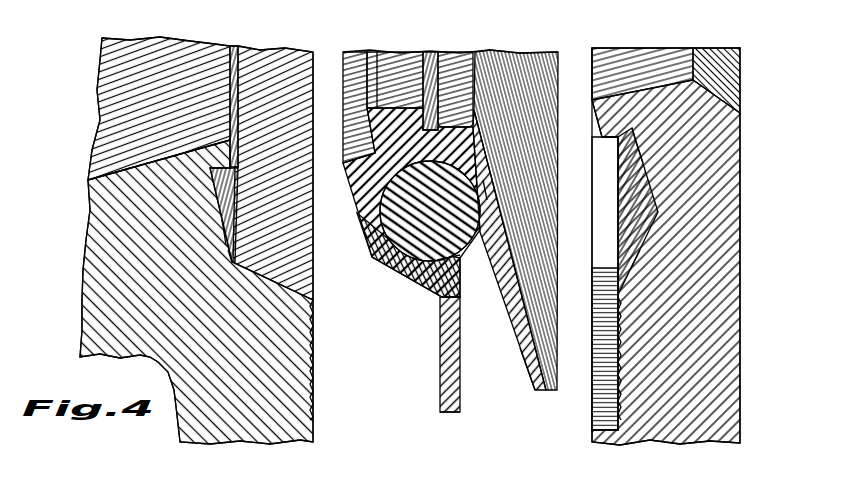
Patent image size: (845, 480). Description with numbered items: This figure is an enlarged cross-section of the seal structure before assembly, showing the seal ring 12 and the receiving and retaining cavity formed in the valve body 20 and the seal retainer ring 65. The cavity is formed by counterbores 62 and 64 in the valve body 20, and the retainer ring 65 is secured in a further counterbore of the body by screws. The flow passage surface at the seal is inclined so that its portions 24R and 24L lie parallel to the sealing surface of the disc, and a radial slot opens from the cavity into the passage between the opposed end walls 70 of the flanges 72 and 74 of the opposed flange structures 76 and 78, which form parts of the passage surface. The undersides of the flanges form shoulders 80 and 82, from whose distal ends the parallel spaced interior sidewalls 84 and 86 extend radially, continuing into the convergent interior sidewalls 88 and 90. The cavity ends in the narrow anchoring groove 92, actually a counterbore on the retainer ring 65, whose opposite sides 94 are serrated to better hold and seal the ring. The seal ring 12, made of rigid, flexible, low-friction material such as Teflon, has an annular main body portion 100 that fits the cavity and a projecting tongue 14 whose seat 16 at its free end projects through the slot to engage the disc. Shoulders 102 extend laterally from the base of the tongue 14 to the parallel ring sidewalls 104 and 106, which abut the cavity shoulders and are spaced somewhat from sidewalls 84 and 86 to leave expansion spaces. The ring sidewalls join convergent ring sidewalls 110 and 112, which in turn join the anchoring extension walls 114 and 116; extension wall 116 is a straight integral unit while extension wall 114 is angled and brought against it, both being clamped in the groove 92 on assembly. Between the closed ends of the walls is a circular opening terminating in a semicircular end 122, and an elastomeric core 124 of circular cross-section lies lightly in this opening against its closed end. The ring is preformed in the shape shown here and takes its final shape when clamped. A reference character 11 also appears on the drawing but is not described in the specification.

The section line reference 11 is at (358, 441).
The seal ring 12 is at (441, 351).
The tongue 14 is at (407, 100).
The seat 16 is at (390, 100).
The valve body 20 is at (88, 310).
The annular inner surface portion 24L is at (108, 172).
The annular inner surface portion 24R is at (677, 78).
The counterbore 62 is at (290, 283).
The counterbore 64 is at (644, 190).
The seal retainer ring 65 is at (732, 362).
The end walls 70 is at (238, 82).
The flange 72 is at (238, 152).
The flange 74 is at (592, 102).
The flange structure 76 is at (215, 140).
The flange structure 78 is at (610, 100).
The shoulder 80 is at (230, 158).
The shoulder 82 is at (633, 140).
The interior sidewall 84 is at (228, 240).
The interior sidewall 86 is at (635, 163).
The convergent interior sidewall 88 is at (233, 265).
The convergent interior sidewall 90 is at (635, 234).
The anchoring groove 92 is at (594, 413).
The serrated sides 94 is at (315, 368).
The main body portion 100 is at (477, 127).
The ring shoulders 102 is at (355, 152).
The ring sidewall 104 is at (366, 221).
The ring sidewall 106 is at (485, 188).
The convergent ring sidewall 110 is at (416, 262).
The convergent ring sidewall 112 is at (494, 233).
The anchoring extension wall 114 is at (445, 395).
The anchoring extension wall 116 is at (541, 363).
The semicircular end 122 is at (358, 188).
The elastomeric core 124 is at (422, 275).